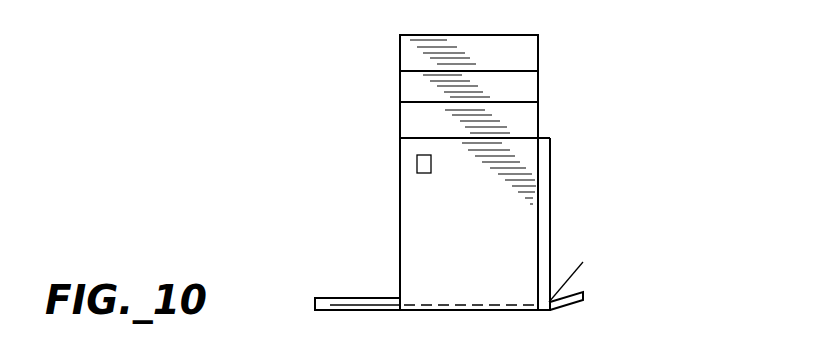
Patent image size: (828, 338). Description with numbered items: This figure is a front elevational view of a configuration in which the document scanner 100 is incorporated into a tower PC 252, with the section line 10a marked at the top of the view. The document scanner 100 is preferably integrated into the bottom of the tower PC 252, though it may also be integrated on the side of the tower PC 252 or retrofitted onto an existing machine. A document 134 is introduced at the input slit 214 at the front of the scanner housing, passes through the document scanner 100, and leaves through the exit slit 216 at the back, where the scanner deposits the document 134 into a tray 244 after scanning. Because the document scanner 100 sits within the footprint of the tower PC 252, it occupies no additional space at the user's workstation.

The section line 10a is at (323, 35).
The tower PC 252 is at (400, 185).
The document scanner 100 is at (550, 165).
The exit slit 216 is at (400, 298).
The tray 244 is at (345, 311).
The input slit 214 is at (549, 300).
The document 134 is at (365, 303).